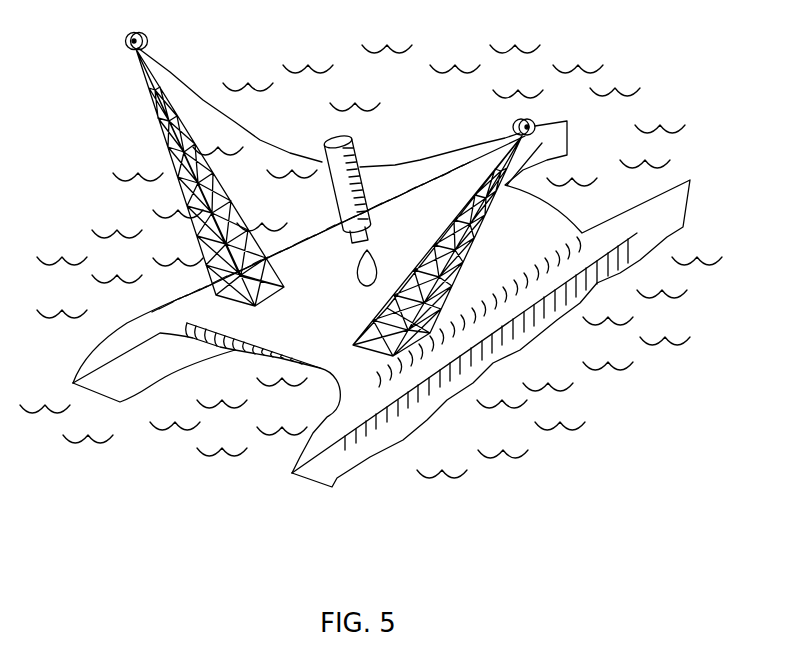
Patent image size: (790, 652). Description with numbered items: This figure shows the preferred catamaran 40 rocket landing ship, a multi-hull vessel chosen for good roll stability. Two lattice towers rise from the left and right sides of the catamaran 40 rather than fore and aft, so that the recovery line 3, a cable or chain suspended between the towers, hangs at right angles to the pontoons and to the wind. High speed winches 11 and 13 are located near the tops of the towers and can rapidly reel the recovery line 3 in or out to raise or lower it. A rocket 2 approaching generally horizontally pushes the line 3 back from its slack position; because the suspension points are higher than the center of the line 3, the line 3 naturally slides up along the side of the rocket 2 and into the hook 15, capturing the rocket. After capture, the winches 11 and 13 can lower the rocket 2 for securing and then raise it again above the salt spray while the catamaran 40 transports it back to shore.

The rocket 2 is at (323, 143).
The recovery line 3 is at (204, 99).
The high speed winch 11 is at (126, 39).
The high speed winch 13 is at (514, 124).
The hook 15 is at (359, 163).
The catamaran 40 is at (293, 476).